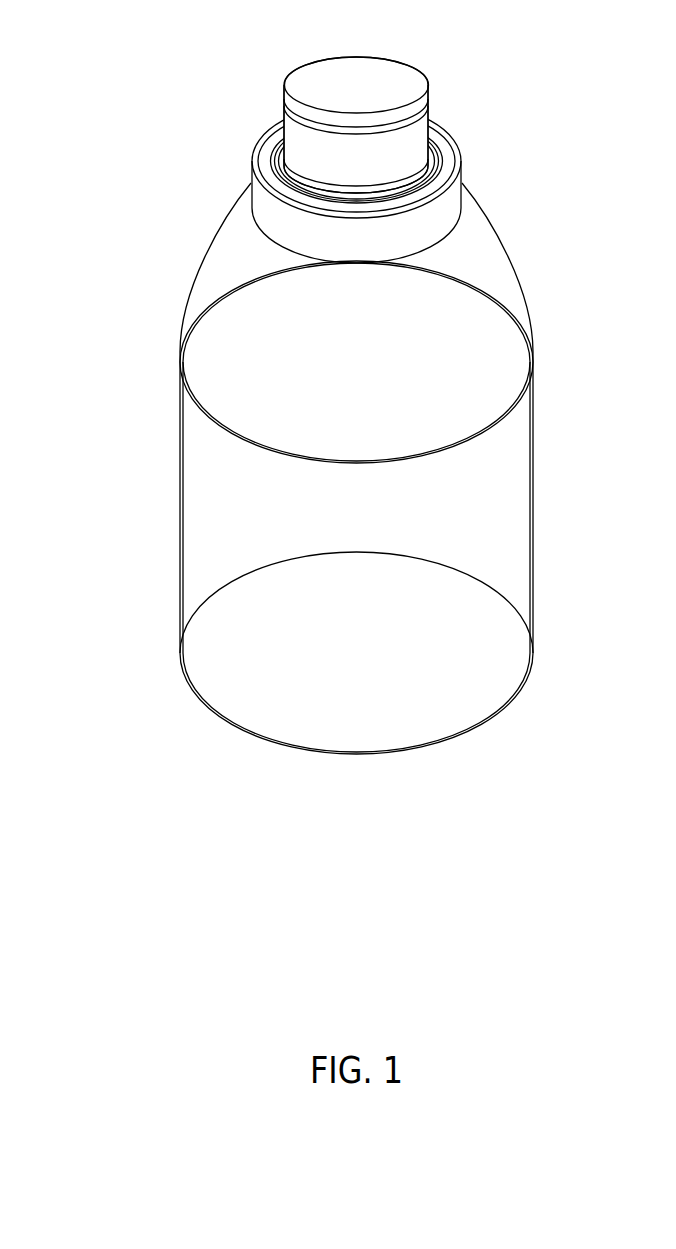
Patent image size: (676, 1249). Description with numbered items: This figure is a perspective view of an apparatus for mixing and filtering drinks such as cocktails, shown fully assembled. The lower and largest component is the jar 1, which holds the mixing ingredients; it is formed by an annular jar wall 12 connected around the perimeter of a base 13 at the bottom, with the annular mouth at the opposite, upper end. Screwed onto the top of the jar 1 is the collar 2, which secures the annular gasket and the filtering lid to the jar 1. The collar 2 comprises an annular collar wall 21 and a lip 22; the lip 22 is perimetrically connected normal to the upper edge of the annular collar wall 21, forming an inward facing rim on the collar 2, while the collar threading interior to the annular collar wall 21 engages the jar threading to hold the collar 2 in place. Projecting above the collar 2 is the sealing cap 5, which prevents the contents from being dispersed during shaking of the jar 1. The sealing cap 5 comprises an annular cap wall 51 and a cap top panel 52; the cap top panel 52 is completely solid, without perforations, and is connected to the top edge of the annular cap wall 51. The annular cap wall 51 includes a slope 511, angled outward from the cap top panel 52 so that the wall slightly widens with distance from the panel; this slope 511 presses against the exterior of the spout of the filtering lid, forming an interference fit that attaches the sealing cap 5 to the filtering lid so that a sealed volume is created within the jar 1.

The jar 1 is at (303, 406).
The annular jar wall 12 is at (180, 470).
The base 13 is at (302, 730).
The collar 2 is at (359, 182).
The annular collar wall 21 is at (452, 190).
The lip 22 is at (450, 145).
The sealing cap 5 is at (364, 96).
The annular cap wall 51 is at (400, 158).
The slope 511 is at (283, 130).
The cap top panel 52 is at (352, 63).